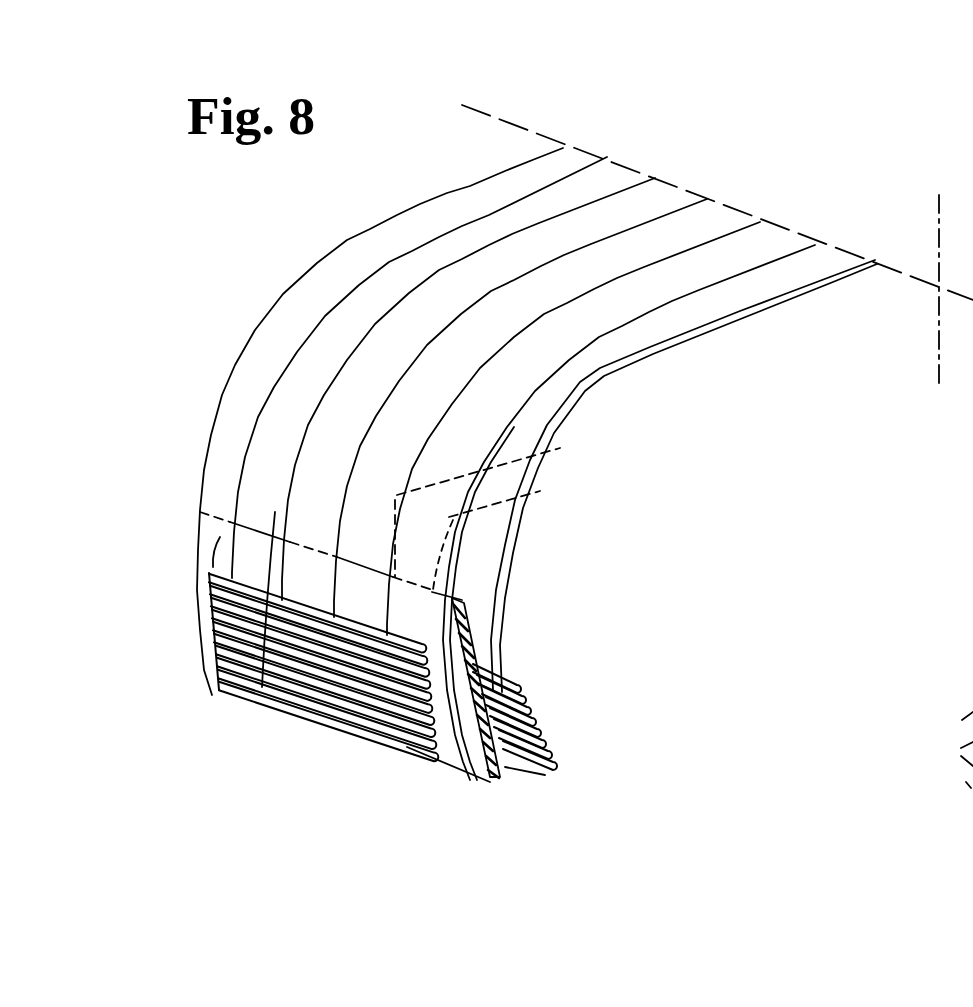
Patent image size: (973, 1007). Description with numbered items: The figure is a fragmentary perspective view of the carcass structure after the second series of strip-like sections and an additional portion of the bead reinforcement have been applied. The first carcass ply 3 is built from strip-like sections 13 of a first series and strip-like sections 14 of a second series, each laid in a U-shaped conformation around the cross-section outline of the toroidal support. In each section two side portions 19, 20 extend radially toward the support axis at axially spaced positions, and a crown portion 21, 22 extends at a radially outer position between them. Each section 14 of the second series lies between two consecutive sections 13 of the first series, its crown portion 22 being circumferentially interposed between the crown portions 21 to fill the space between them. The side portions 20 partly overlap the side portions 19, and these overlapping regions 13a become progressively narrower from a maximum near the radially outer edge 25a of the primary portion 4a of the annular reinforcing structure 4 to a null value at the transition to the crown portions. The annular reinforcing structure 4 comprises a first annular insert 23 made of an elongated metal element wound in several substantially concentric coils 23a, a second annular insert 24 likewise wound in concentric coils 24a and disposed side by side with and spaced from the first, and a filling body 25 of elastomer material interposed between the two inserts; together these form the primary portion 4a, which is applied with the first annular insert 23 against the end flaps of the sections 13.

The first carcass ply 3 is at (443, 190).
The strip-like section of the first series 13 is at (611, 180).
The strip-like section of the second series 14 is at (567, 160).
The overlapping region 13a is at (407, 513).
The side portion 19 is at (262, 687).
The side portion 20 is at (215, 695).
The crown portion 21 is at (735, 297).
The crown portion 22 is at (613, 308).
The first annular insert 23 is at (540, 698).
The coils 23a is at (543, 723).
The second annular insert 24 is at (295, 660).
The coils 24a is at (367, 673).
The filling body 25 is at (505, 675).
The radially outer edge 25a is at (453, 612).
The annular reinforcing structure 4 is at (432, 763).
The primary portion 4a is at (507, 767).